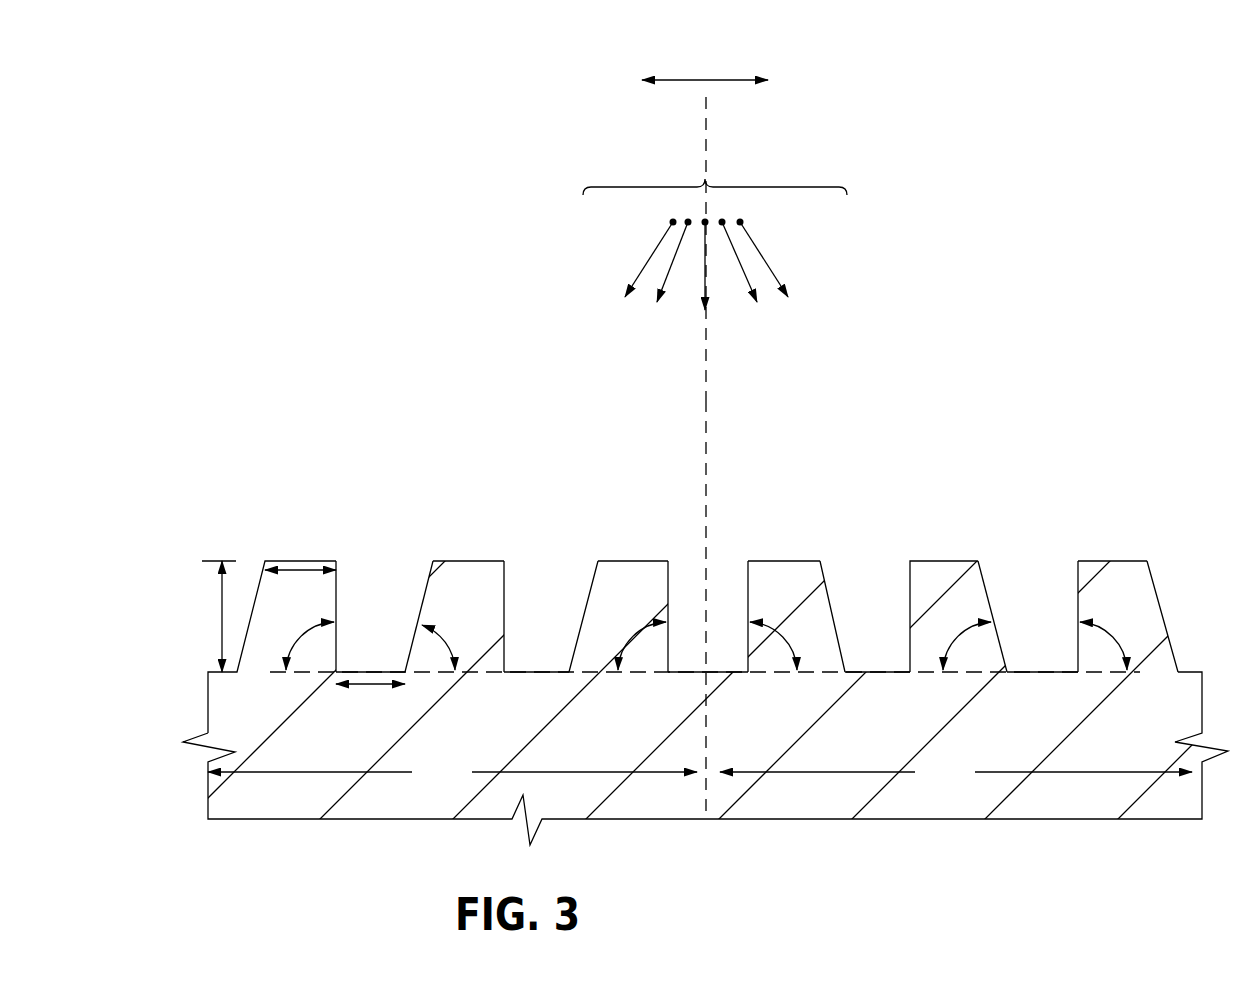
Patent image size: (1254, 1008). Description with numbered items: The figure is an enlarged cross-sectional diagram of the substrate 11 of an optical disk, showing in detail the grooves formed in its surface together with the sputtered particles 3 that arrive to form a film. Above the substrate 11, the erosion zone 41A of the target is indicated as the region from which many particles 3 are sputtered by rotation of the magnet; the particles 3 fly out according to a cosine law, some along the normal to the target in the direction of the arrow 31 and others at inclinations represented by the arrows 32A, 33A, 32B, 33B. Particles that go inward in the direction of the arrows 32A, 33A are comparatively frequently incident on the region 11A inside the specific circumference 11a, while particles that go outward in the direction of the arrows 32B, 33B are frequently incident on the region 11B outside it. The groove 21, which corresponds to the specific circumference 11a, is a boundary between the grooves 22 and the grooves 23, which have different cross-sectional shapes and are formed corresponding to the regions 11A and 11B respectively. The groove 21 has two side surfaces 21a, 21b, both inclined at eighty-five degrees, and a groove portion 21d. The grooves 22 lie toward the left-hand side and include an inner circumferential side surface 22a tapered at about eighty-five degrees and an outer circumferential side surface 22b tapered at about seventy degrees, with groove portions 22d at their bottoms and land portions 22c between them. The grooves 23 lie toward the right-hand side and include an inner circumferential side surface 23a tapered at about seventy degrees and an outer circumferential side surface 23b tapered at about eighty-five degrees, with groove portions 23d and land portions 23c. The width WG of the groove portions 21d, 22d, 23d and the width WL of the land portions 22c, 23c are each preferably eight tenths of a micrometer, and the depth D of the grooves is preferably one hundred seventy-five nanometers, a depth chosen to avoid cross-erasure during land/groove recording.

The substrate 11 is at (675, 787).
The specific circumference 11a is at (707, 735).
The region inside the specific circumference 11A is at (452, 772).
The region outside the specific circumference 11B is at (956, 772).
The groove having the specific circumference 21 is at (715, 547).
The side surface of groove 21 21a is at (681, 569).
The side surface of groove 21 21b is at (738, 572).
The groove portion of groove 21 21d is at (708, 670).
The grooves inside the specific circumference 22 is at (560, 550).
The inner circumferential side surface of grooves 22 22a is at (346, 574).
The outer circumferential side surface of grooves 22 22b is at (418, 570).
The land portion 22c is at (474, 562).
The groove portion of grooves 22 22d is at (370, 672).
The grooves outside the specific circumference 23 is at (1040, 549).
The inner circumferential side surface of grooves 23 23a is at (1000, 578).
The outer circumferential side surface of grooves 23 23b is at (1069, 572).
The land portion 23c is at (1143, 560).
The groove portion of grooves 23 23d is at (866, 670).
The particles 3 is at (715, 184).
The arrow along the normal 31 is at (705, 312).
The arrow inclined inward 32A is at (657, 305).
The arrow inclined outward 32B is at (757, 305).
The arrow inclined further inward 33A is at (625, 300).
The arrow inclined further outward 33B is at (788, 300).
The erosion zone 41A is at (700, 218).
The depth of the grooves D is at (217, 616).
The width of the land portions WL is at (300, 586).
The width of the groove portions WG is at (370, 702).